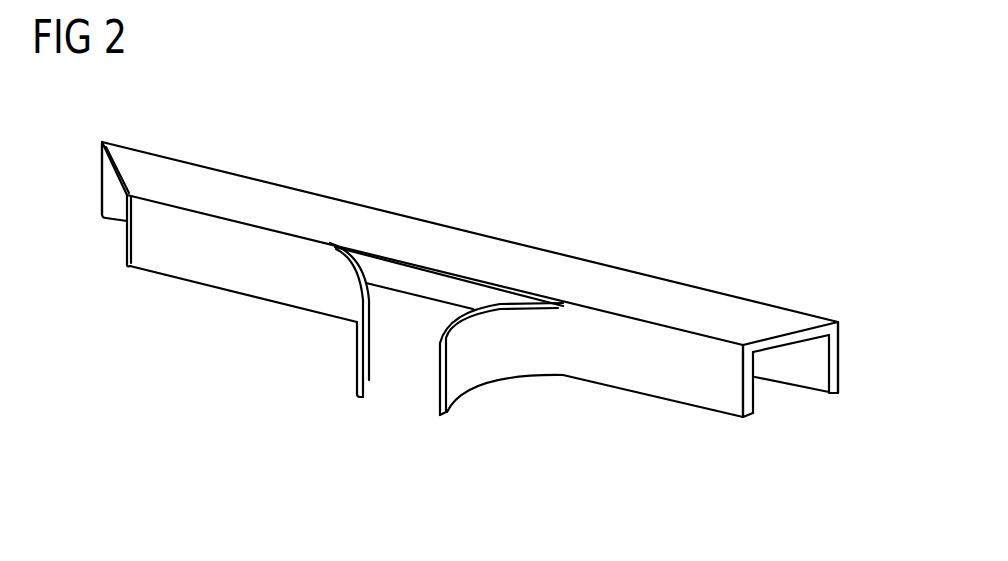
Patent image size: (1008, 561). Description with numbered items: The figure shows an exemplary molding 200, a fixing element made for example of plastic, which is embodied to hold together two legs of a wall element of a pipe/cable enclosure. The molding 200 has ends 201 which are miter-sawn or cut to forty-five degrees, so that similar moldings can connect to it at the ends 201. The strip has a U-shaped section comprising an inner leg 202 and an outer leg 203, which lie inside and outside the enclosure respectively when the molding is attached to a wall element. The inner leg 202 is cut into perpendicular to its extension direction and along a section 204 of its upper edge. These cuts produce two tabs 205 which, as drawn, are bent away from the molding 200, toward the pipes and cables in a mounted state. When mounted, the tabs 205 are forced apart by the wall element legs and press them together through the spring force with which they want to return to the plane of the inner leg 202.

The molding 200 is at (256, 134).
The ends 201 is at (95, 253).
The inner leg 202 is at (720, 400).
The outer leg 203 is at (818, 364).
The section 204 is at (429, 267).
The tabs 205 is at (368, 379).